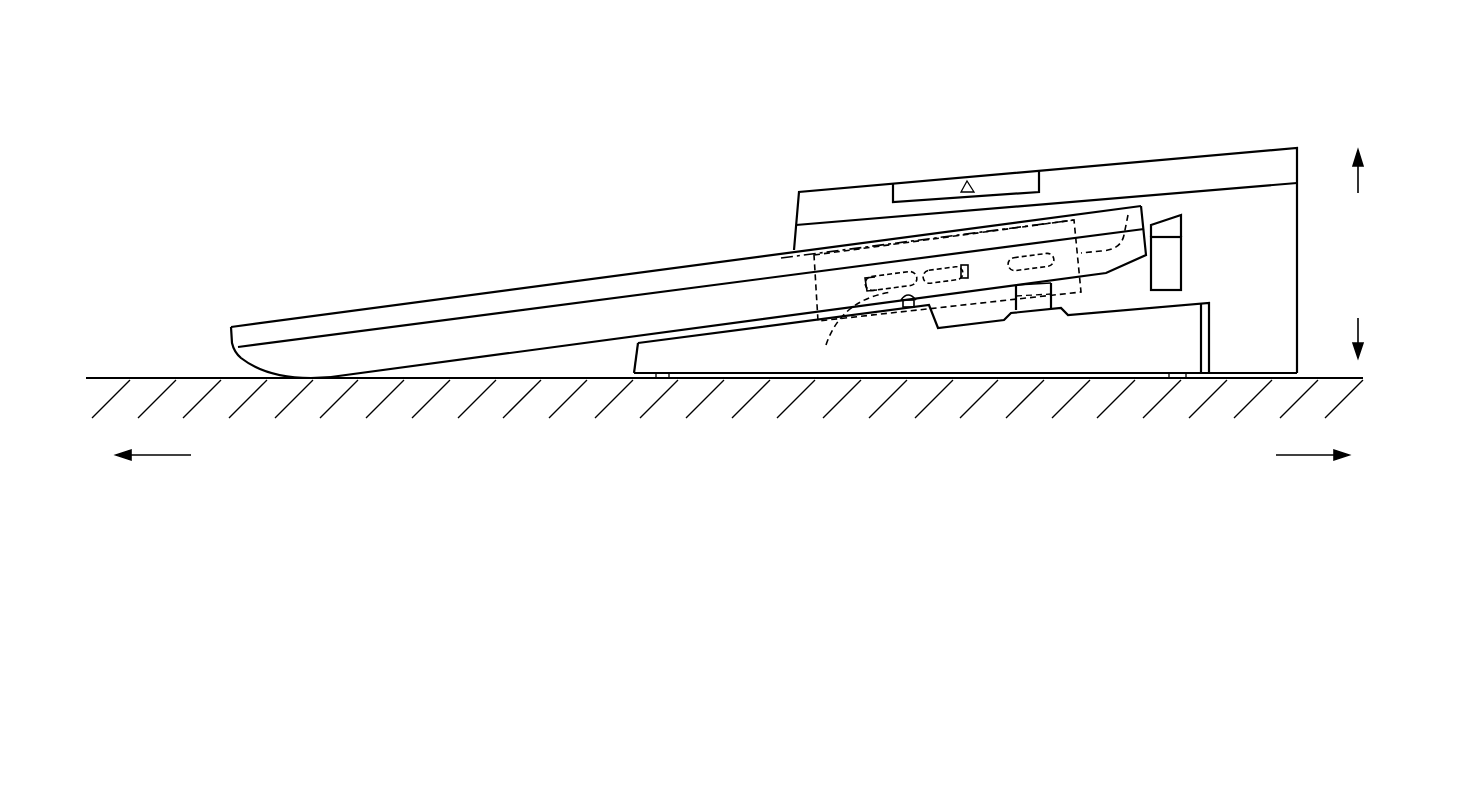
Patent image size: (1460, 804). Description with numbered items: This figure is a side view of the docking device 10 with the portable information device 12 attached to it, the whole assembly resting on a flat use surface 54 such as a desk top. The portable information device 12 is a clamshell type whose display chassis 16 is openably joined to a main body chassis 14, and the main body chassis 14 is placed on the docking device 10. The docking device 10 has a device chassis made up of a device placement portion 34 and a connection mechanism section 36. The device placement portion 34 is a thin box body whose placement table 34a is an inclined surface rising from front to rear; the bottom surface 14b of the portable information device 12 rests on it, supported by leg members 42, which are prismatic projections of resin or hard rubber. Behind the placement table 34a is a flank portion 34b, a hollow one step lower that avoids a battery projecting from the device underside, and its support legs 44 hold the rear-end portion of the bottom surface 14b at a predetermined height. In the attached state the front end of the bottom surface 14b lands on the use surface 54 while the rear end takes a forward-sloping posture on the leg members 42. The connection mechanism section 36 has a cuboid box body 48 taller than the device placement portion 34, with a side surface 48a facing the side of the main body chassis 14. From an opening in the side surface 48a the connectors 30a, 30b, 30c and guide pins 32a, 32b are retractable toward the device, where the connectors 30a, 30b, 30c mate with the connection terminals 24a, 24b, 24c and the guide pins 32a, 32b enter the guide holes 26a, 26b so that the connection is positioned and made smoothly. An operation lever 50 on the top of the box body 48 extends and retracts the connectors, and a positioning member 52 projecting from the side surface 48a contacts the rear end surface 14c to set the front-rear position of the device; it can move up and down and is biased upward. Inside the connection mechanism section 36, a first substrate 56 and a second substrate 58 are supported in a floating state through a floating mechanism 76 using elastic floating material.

The docking device 10 is at (1324, 227).
The portable information device 12 is at (733, 366).
The main body chassis 14 is at (783, 366).
The bottom surface 14b is at (528, 353).
The rear end surface 14c is at (1150, 245).
The display chassis 16 is at (338, 320).
The connection terminal 24a is at (870, 169).
The connection terminal 24b is at (949, 180).
The connection terminal 24c is at (1062, 173).
The guide hole 26a is at (907, 356).
The guide hole 26b is at (994, 380).
The connector 30a is at (878, 270).
The connector 30b is at (947, 262).
The connector 30c is at (1037, 256).
The guide pin 32a is at (820, 323).
The guide pin 32b is at (992, 260).
The device placement portion 34 is at (1005, 352).
The placement table 34a is at (665, 340).
The flank portion 34b is at (1137, 290).
The connection mechanism section 36 is at (800, 183).
The leg member 42 is at (913, 310).
The support leg 44 is at (1040, 302).
The box body 48 is at (1040, 231).
The side surface 48a is at (1245, 207).
The operation lever 50 is at (1009, 192).
The positioning member 52 is at (1170, 228).
The use surface 54 is at (468, 375).
The first substrate 56 is at (815, 293).
The second substrate 58 is at (1124, 214).
The floating mechanism 76 is at (880, 322).